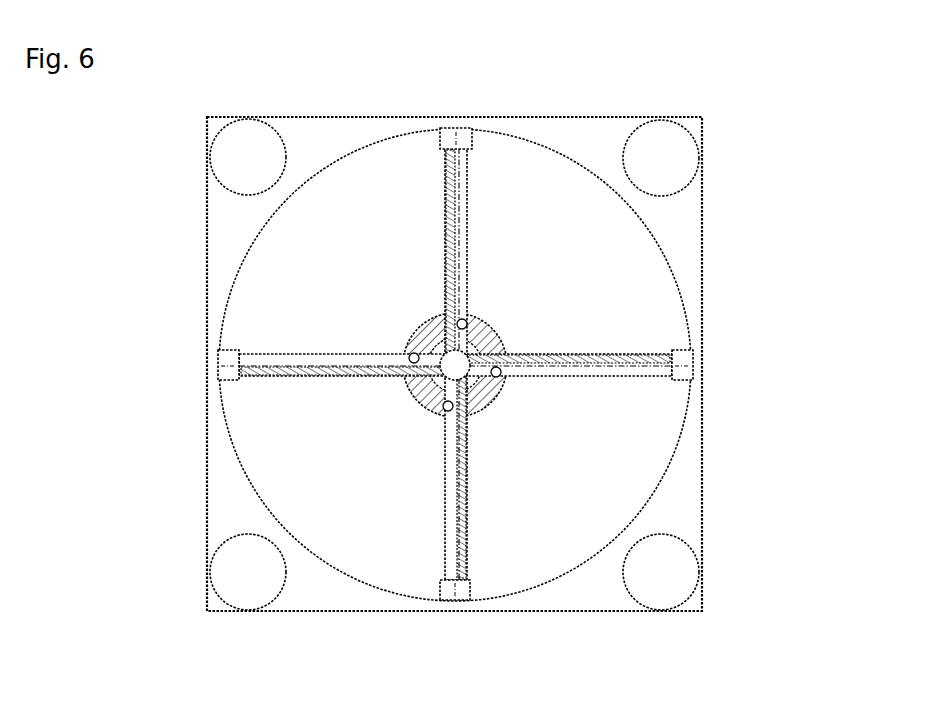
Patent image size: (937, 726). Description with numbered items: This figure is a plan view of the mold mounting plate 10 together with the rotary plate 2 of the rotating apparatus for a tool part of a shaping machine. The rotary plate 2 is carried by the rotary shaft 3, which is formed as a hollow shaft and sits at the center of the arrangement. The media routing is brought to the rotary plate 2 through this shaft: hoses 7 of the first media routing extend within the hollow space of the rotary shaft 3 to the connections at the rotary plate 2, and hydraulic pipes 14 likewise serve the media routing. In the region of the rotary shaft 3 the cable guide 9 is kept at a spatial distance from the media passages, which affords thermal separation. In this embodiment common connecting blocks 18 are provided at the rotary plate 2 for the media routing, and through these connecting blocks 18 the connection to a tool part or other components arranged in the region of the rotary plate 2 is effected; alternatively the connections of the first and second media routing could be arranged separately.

The rotary plate 2 is at (612, 297).
The rotary shaft 3 is at (487, 397).
The hose 7 is at (444, 237).
The cable guide 9 is at (455, 365).
The mold mounting plate 10 is at (587, 137).
The hydraulic pipe 14 is at (464, 180).
The connecting block 18 is at (455, 140).